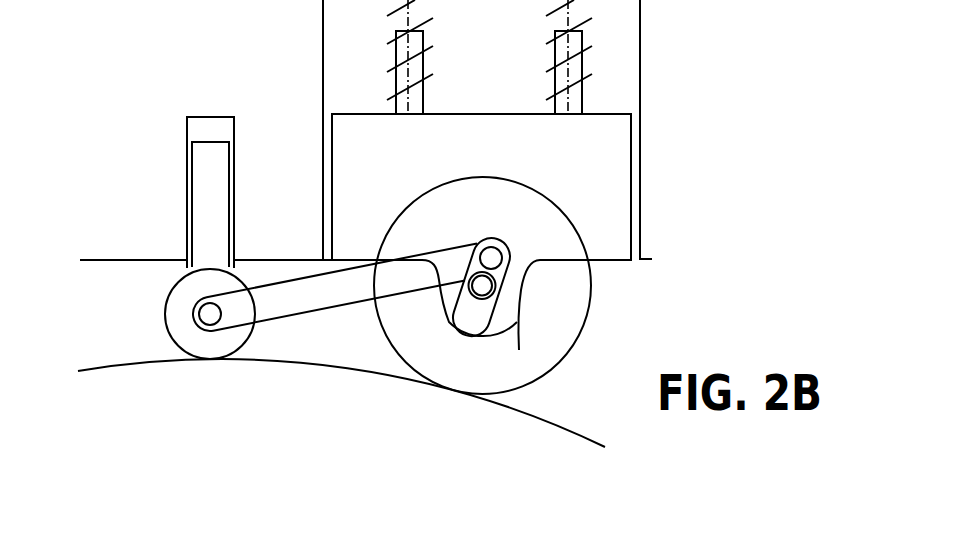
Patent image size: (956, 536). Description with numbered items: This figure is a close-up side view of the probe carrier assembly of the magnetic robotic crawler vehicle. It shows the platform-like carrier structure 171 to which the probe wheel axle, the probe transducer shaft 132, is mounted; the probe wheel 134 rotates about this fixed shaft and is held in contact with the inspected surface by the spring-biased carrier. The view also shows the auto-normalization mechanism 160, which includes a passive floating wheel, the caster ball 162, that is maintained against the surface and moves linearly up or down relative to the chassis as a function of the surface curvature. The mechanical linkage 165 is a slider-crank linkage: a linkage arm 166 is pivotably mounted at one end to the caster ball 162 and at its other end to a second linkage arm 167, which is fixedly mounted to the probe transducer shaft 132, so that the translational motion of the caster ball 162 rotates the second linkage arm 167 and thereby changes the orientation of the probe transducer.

The auto-normalization mechanism 160 is at (150, 313).
The caster ball 162 is at (188, 335).
The mechanical linkage 165 is at (311, 238).
The linkage arm 166 is at (279, 318).
The second linkage arm 167 is at (465, 338).
The carrier structure 171 is at (615, 223).
The probe wheel 134 is at (565, 307).
The probe transducer shaft 132 is at (494, 291).